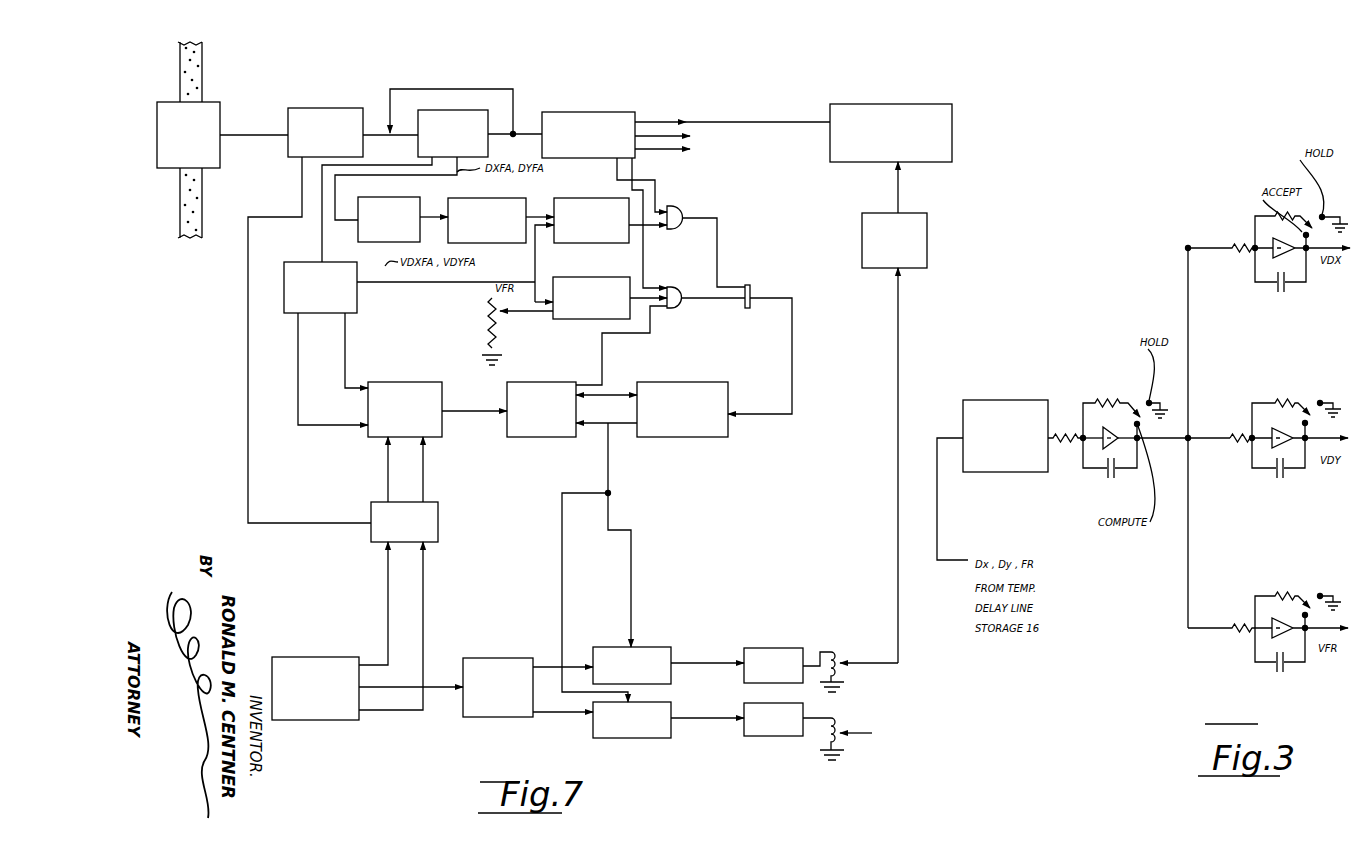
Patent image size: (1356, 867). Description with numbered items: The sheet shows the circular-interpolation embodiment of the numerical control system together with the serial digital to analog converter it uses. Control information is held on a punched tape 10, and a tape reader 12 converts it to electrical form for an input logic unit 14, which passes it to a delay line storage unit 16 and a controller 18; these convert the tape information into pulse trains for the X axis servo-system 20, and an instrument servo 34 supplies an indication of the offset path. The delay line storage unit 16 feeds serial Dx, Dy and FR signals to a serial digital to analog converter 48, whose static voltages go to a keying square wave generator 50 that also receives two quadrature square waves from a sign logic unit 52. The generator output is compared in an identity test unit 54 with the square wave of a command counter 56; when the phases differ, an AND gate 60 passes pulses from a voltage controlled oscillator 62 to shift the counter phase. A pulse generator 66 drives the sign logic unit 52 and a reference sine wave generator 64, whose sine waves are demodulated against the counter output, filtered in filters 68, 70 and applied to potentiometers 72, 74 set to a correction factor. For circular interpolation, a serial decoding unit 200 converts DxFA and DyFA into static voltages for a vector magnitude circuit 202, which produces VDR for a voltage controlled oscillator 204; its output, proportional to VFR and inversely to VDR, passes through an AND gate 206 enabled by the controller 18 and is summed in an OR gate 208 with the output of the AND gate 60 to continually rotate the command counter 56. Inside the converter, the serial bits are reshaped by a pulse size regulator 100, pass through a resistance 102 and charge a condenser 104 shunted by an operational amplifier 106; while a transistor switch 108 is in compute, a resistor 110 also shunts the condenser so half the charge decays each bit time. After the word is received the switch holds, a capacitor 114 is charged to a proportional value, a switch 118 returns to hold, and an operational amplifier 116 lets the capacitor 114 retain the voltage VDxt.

In FIG. 7, the punched tape 10 is at (204, 80).
In FIG. 7, the tape reader 12 is at (165, 170).
In FIG. 7, the input logic unit 14 is at (300, 108).
In FIG. 7, the delay line storage unit 16 is at (452, 110).
In FIG. 7, the controller 18 is at (590, 112).
In FIG. 7, the X axis servo-system 20 is at (875, 104).
In FIG. 7, the instrument servo 34 is at (927, 248).
In FIG. 3, the instrument servo 34 is at (1166, 609).
In FIG. 7, the serial digital to analog converter 48 is at (357, 305).
In FIG. 7, the keying square wave generator 50 is at (425, 382).
In FIG. 7, the sign logic unit 52 is at (438, 530).
In FIG. 7, the identity test unit 54 is at (530, 437).
In FIG. 7, the command counter 56 is at (685, 437).
In FIG. 7, the AND gate 60 is at (676, 310).
In FIG. 7, the voltage controlled oscillator 62 is at (588, 319).
In FIG. 7, the reference sine wave generator 64 is at (497, 717).
In FIG. 7, the pulse generator 66 is at (320, 720).
In FIG. 7, the filter 68 is at (768, 648).
In FIG. 7, the filter 70 is at (740, 736).
In FIG. 7, the potentiometer 72 is at (838, 652).
In FIG. 7, the potentiometer 74 is at (840, 742).
In FIG. 7, the serial decoding unit 200 is at (372, 197).
In FIG. 7, the vector magnitude circuit 202 is at (448, 198).
In FIG. 7, the voltage controlled oscillator 204 is at (566, 198).
In FIG. 7, the AND gate 206 is at (683, 213).
In FIG. 7, the OR gate 208 is at (745, 289).
In FIG. 3, the pulse size regulator 100 is at (978, 400).
In FIG. 3, the resistance 102 is at (1073, 442).
In FIG. 3, the condenser 104 is at (1110, 480).
In FIG. 3, the operational amplifier 106 is at (1130, 422).
In FIG. 3, the transistor switch 108 is at (1140, 410).
In FIG. 3, the resistor 110 is at (1107, 401).
In FIG. 3, the capacitor 114 is at (1281, 292).
In FIG. 3, the operational amplifier 116 is at (1285, 259).
In FIG. 3, the switch 118 is at (1323, 215).